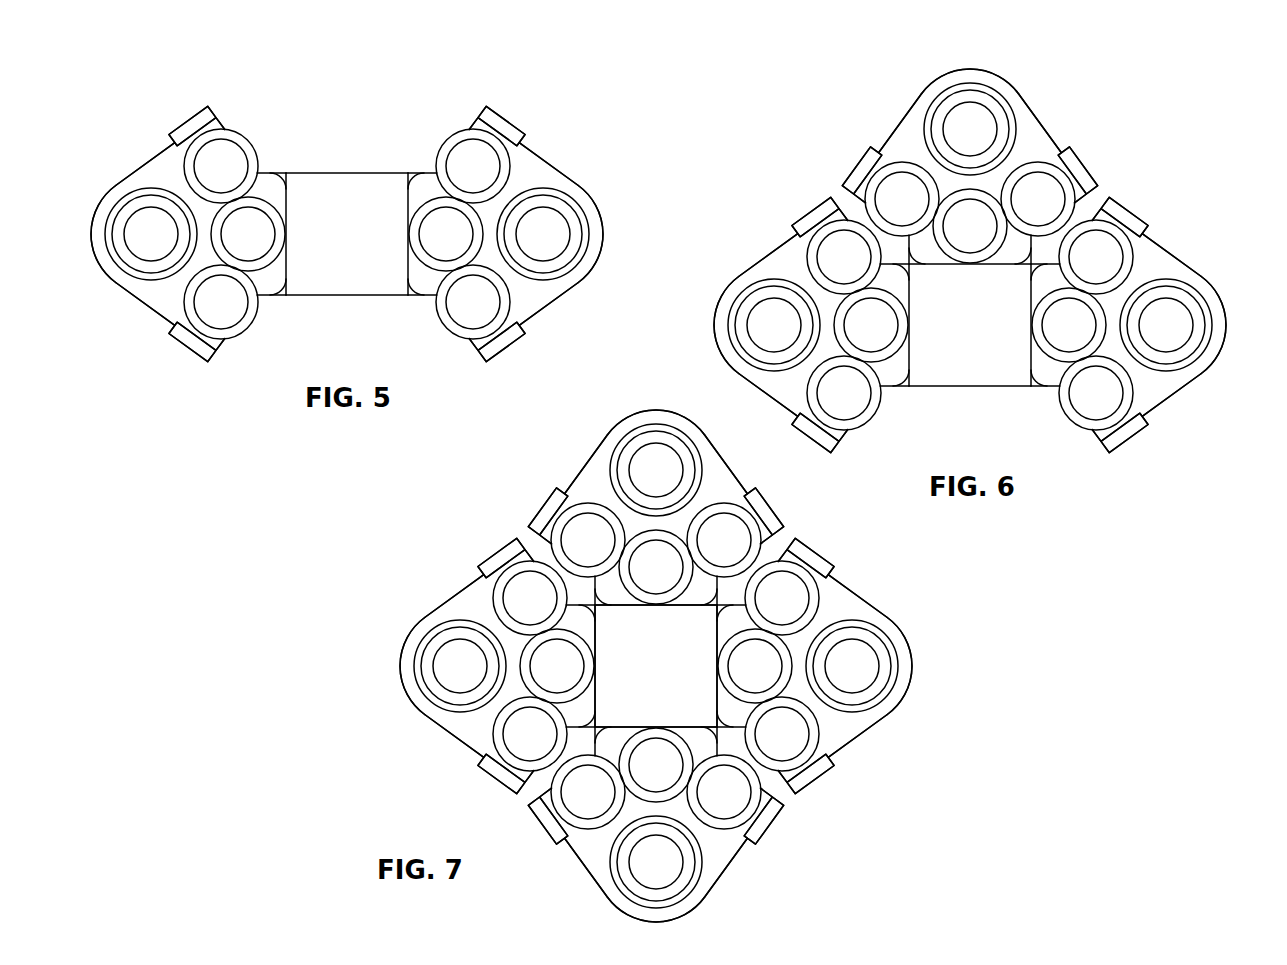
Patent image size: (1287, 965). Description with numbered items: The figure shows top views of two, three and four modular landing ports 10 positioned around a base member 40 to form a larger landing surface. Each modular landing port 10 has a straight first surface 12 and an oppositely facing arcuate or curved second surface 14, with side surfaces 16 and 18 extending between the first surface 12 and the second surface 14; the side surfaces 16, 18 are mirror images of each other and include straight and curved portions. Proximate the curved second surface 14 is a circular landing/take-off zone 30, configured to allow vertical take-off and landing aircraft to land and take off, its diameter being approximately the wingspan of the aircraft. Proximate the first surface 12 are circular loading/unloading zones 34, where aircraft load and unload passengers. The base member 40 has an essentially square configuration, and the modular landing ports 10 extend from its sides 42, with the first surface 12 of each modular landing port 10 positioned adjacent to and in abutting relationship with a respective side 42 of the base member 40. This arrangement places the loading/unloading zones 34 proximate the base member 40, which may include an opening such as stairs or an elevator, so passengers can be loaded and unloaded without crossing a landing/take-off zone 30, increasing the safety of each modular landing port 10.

In FIG. 5, the modular landing port 10 is at (214, 86).
In FIG. 6, the modular landing port 10 is at (1078, 56).
In FIG. 7, the modular landing port 10 is at (553, 448).
In FIG. 5, the first surface 12 is at (287, 268).
In FIG. 6, the first surface 12 is at (953, 264).
In FIG. 7, the first surface 12 is at (597, 672).
In FIG. 5, the second surface 14 is at (94, 225).
In FIG. 6, the second surface 14 is at (973, 67).
In FIG. 7, the second surface 14 is at (650, 412).
In FIG. 5, the side surface 16 is at (542, 144).
In FIG. 6, the side surface 16 is at (894, 118).
In FIG. 7, the side surface 16 is at (594, 450).
In FIG. 5, the side surface 18 is at (150, 160).
In FIG. 6, the side surface 18 is at (1043, 114).
In FIG. 7, the side surface 18 is at (728, 466).
In FIG. 5, the landing/take-off zone 30 is at (140, 240).
In FIG. 6, the landing/take-off zone 30 is at (978, 122).
In FIG. 7, the landing/take-off zone 30 is at (644, 483).
In FIG. 5, the loading/unloading zone 34 is at (255, 220).
In FIG. 6, the loading/unloading zone 34 is at (838, 240).
In FIG. 7, the loading/unloading zone 34 is at (576, 553).
In FIG. 5, the base member 40 is at (336, 178).
In FIG. 6, the base member 40 is at (968, 357).
In FIG. 7, the base member 40 is at (645, 680).
In FIG. 5, the side 42 is at (283, 178).
In FIG. 6, the side 42 is at (1014, 260).
In FIG. 7, the side 42 is at (748, 598).